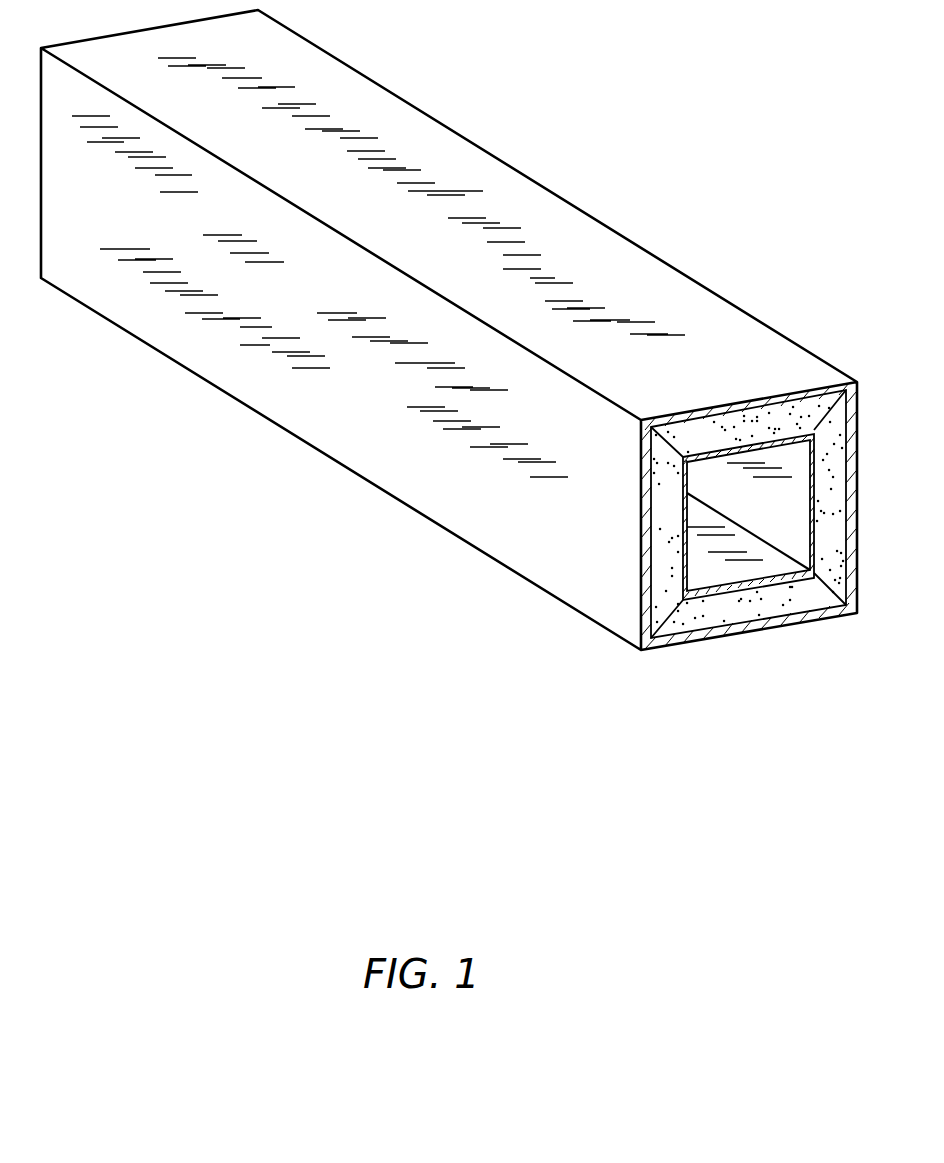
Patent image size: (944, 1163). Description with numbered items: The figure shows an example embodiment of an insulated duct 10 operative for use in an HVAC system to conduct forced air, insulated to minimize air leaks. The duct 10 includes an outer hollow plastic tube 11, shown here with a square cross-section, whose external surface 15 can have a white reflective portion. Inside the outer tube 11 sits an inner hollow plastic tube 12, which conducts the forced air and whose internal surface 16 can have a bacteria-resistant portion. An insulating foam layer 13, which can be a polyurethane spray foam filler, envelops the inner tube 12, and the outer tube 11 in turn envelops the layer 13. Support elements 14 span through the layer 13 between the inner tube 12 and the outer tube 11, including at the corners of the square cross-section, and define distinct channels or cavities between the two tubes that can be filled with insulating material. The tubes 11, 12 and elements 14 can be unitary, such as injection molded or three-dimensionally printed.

The duct 10 is at (193, 511).
The outer hollow plastic tube 11 is at (162, 355).
The inner hollow plastic tube 12 is at (755, 438).
The insulating foam layer 13 is at (767, 603).
The support elements 14 is at (830, 597).
The external surface 15 is at (622, 257).
The internal surface 16 is at (708, 573).